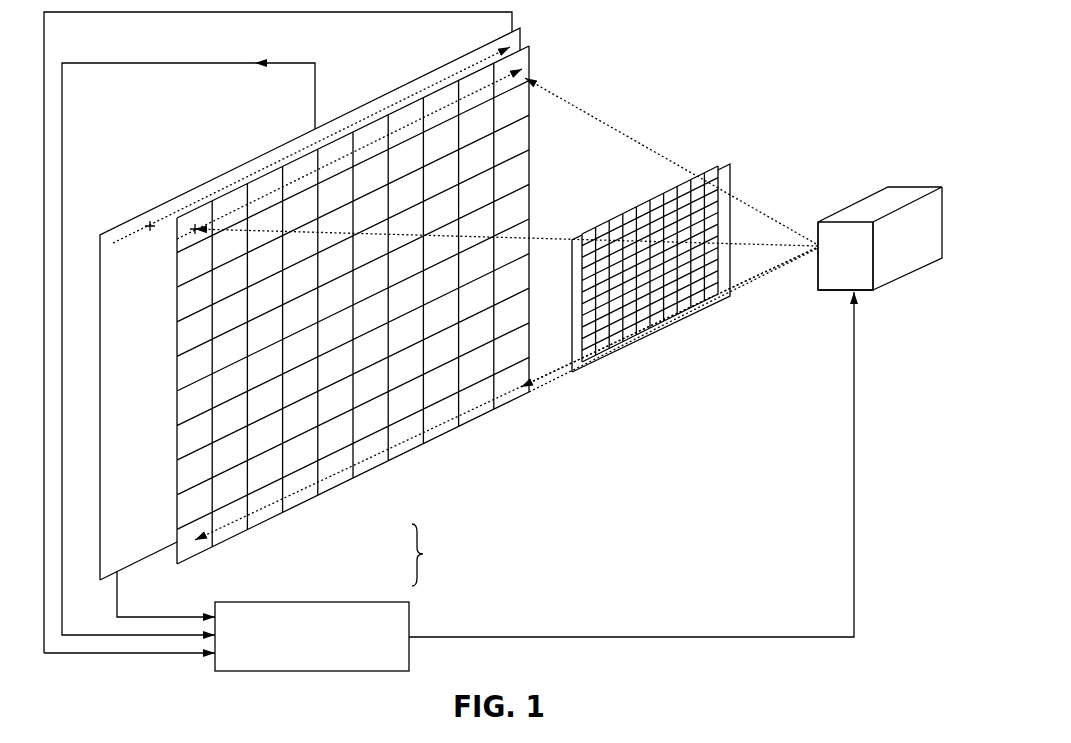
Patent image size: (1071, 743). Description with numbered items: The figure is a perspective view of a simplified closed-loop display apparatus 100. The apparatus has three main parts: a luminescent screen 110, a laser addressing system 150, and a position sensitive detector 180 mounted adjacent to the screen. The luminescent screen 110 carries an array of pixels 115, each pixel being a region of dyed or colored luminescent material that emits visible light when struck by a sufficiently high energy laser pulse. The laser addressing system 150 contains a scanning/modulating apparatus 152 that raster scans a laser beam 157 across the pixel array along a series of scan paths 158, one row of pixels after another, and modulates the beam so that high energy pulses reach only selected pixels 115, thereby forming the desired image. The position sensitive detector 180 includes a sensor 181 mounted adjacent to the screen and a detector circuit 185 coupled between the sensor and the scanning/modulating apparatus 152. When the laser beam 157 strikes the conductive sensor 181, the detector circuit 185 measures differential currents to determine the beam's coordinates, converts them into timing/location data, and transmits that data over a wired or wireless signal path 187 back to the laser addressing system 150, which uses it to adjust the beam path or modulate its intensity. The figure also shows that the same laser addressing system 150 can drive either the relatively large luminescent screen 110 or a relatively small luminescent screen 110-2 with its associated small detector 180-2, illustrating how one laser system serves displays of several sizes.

The display apparatus 100 is at (840, 64).
The luminescent screen 110 is at (531, 58).
The pixels 115 is at (270, 185).
The laser addressing system 150 is at (872, 151).
The scanning/modulating apparatus 152 is at (875, 193).
The laser beam 157 is at (755, 247).
The scan paths 158 is at (430, 90).
The position sensitive detector 180 is at (439, 555).
The sensor 181 is at (143, 565).
The detector circuit 185 is at (360, 602).
The signal path 187 is at (645, 636).
The small luminescent screen 110-2 is at (678, 273).
The second detector 180-2 is at (629, 348).